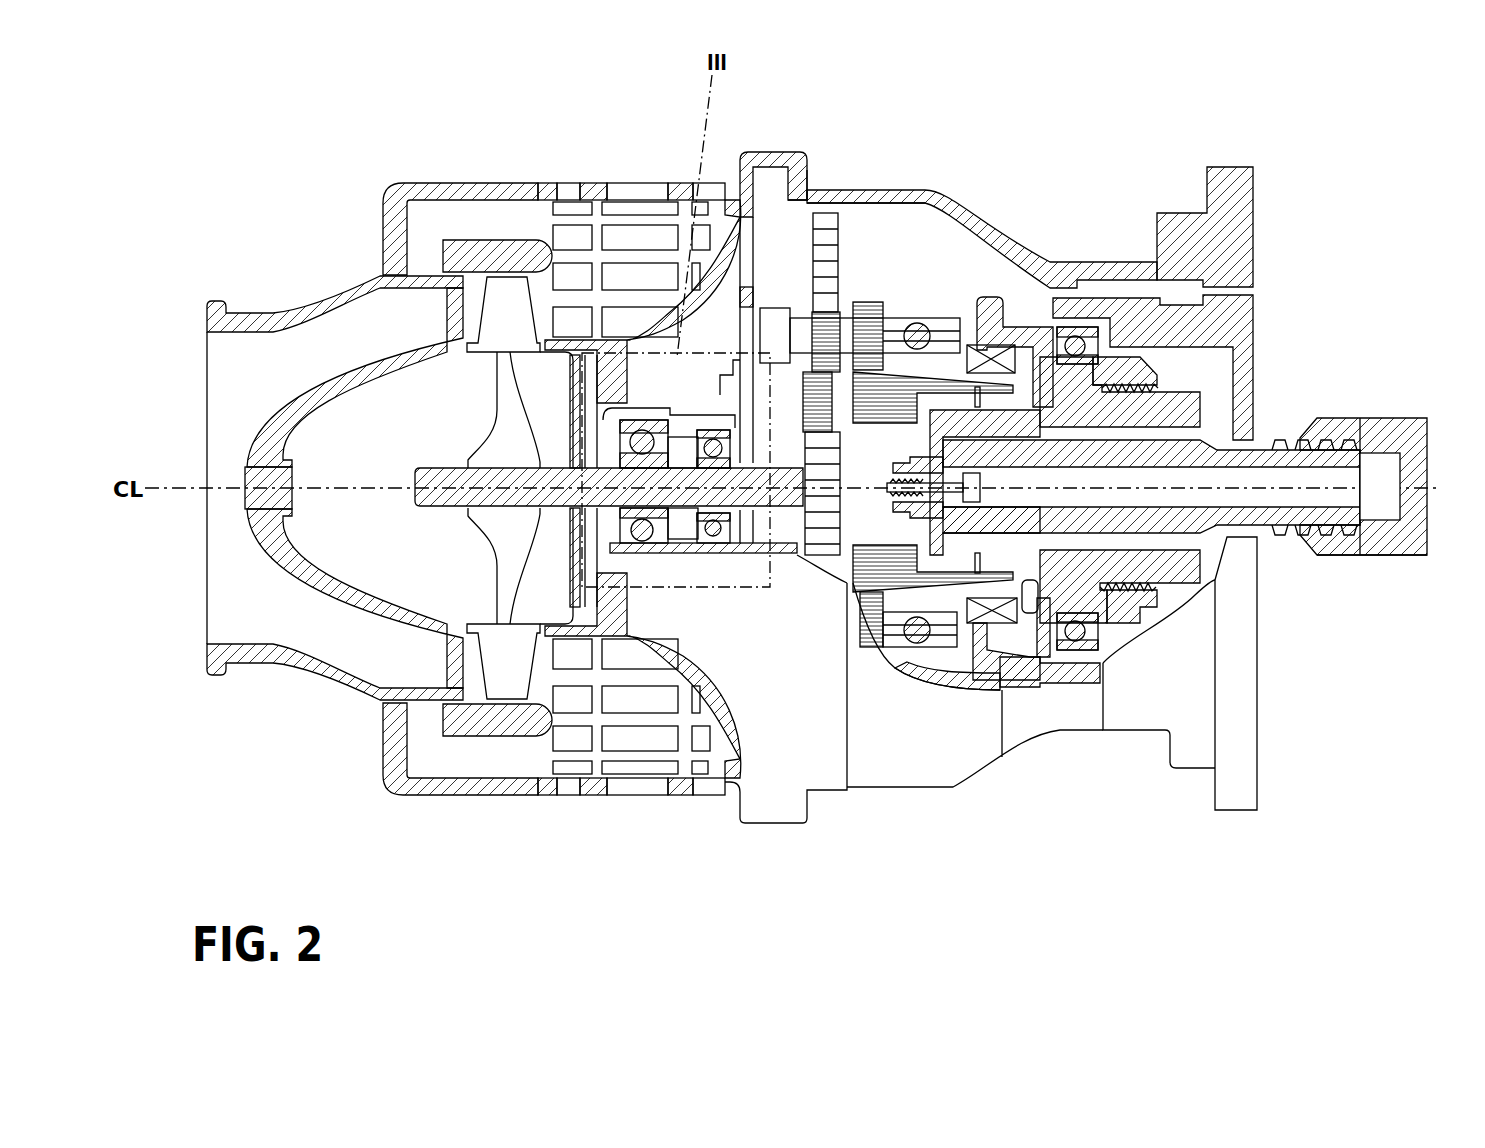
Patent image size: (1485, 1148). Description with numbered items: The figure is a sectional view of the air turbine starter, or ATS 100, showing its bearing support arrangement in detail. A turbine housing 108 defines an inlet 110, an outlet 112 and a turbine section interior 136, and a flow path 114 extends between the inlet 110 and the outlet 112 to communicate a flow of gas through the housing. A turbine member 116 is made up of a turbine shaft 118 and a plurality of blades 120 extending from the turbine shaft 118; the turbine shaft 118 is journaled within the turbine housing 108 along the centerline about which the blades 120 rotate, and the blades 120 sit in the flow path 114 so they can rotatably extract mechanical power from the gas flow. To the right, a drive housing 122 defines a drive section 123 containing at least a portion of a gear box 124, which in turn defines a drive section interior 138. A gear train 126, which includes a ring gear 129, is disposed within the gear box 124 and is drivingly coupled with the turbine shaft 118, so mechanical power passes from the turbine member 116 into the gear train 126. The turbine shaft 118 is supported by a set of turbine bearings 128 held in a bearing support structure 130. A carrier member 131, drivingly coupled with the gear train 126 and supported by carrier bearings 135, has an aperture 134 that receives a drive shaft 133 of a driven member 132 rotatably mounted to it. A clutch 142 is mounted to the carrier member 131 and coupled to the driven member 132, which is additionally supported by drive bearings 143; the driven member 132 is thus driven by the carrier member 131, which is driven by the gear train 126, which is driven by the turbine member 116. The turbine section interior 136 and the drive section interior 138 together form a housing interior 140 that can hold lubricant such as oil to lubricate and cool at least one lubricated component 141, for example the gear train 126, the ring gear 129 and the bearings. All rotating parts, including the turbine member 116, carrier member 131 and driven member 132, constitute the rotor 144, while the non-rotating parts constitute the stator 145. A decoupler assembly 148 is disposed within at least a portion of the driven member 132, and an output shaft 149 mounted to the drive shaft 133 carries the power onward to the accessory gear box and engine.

The air turbine starter 100 is at (382, 93).
The turbine housing 108 is at (472, 182).
The inlet 110 is at (237, 368).
The outlet 112 is at (658, 178).
The flow path 114 is at (360, 338).
The turbine member 116 is at (548, 637).
The turbine shaft 118 is at (460, 497).
The plurality of blades 120 is at (511, 302).
The drive housing 122 is at (976, 200).
The drive section 123 is at (972, 190).
The gear box 124 is at (807, 168).
The gear train 126 is at (787, 247).
The turbine bearings 128 is at (713, 527).
The ring gear 129 is at (868, 308).
The bearing support structure 130 is at (687, 547).
The carrier member 131 is at (887, 577).
The driven member 132 is at (988, 298).
The drive shaft 133 is at (1185, 455).
The aperture 134 is at (896, 470).
The carrier bearings 135 is at (927, 645).
The turbine section interior 136 is at (382, 537).
The drive section interior 138 is at (936, 278).
The housing interior 140 is at (731, 342).
The lubricated component 141 is at (937, 310).
The clutch 142 is at (1087, 648).
The drive bearings 143 is at (1087, 643).
The rotor 144 is at (443, 457).
The stator 145 is at (617, 642).
The decoupler assembly 148 is at (1327, 574).
The output shaft 149 is at (1400, 485).